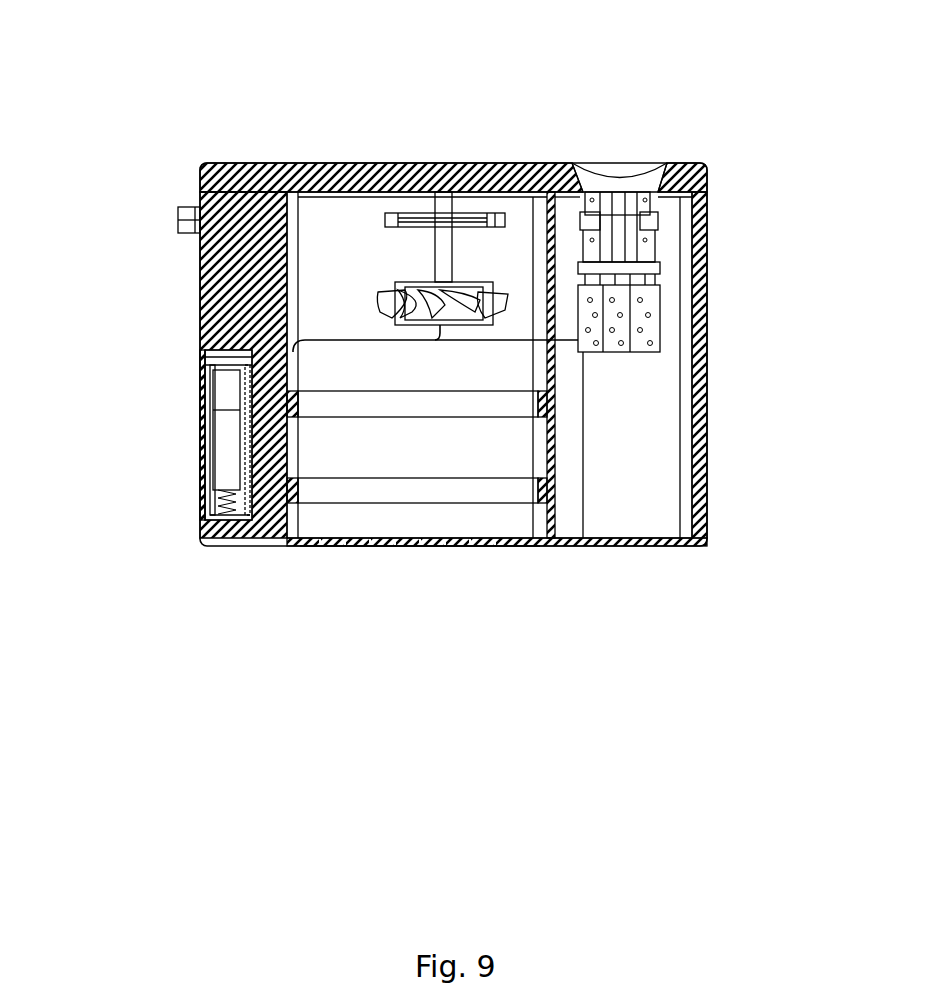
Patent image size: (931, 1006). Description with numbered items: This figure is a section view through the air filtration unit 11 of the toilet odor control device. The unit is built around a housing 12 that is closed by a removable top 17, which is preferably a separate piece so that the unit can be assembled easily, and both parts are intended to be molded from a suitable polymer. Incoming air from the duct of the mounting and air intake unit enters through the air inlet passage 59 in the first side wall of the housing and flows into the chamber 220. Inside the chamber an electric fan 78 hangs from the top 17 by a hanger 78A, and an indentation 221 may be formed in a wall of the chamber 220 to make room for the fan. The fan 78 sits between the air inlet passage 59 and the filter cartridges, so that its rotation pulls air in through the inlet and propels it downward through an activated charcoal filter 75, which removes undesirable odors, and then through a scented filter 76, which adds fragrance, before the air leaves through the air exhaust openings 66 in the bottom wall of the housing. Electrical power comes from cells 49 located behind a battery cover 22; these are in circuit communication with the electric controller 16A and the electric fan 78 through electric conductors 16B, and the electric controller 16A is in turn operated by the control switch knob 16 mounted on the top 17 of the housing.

The air filtration unit 11 is at (690, 165).
The housing 12 is at (249, 165).
The control switch knob 16 is at (615, 172).
The electric controller 16A is at (657, 243).
The electric conductors 16B is at (300, 342).
The top 17 is at (440, 168).
The battery cover 22 is at (202, 405).
The cells 49 is at (225, 445).
The air inlet passage 59 is at (413, 215).
The air exhaust openings 66 is at (387, 547).
The activated charcoal filter 75 is at (482, 403).
The scented filter 76 is at (458, 493).
The electric fan 78 is at (388, 298).
The hanger 78A is at (442, 247).
The chamber 220 is at (522, 212).
The indentation 221 is at (403, 287).